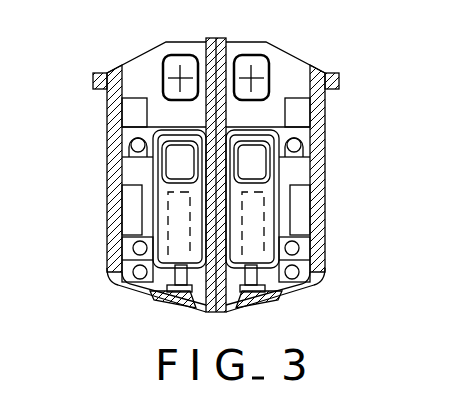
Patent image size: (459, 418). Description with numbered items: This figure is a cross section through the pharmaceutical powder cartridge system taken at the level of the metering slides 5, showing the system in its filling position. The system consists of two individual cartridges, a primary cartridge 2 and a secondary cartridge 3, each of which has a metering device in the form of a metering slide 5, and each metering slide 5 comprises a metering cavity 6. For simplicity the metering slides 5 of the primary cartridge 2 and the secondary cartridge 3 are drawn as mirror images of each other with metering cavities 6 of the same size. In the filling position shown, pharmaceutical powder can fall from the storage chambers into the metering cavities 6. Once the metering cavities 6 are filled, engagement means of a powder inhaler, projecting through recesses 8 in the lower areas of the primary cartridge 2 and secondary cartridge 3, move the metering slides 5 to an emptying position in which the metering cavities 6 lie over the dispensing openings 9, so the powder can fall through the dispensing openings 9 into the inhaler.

The primary cartridge 2 is at (313, 178).
The secondary cartridge 3 is at (113, 180).
The metering slide 5 is at (177, 213).
The metering cavity 6 is at (187, 163).
The recess 8 is at (132, 117).
The dispensing opening 9 is at (174, 74).